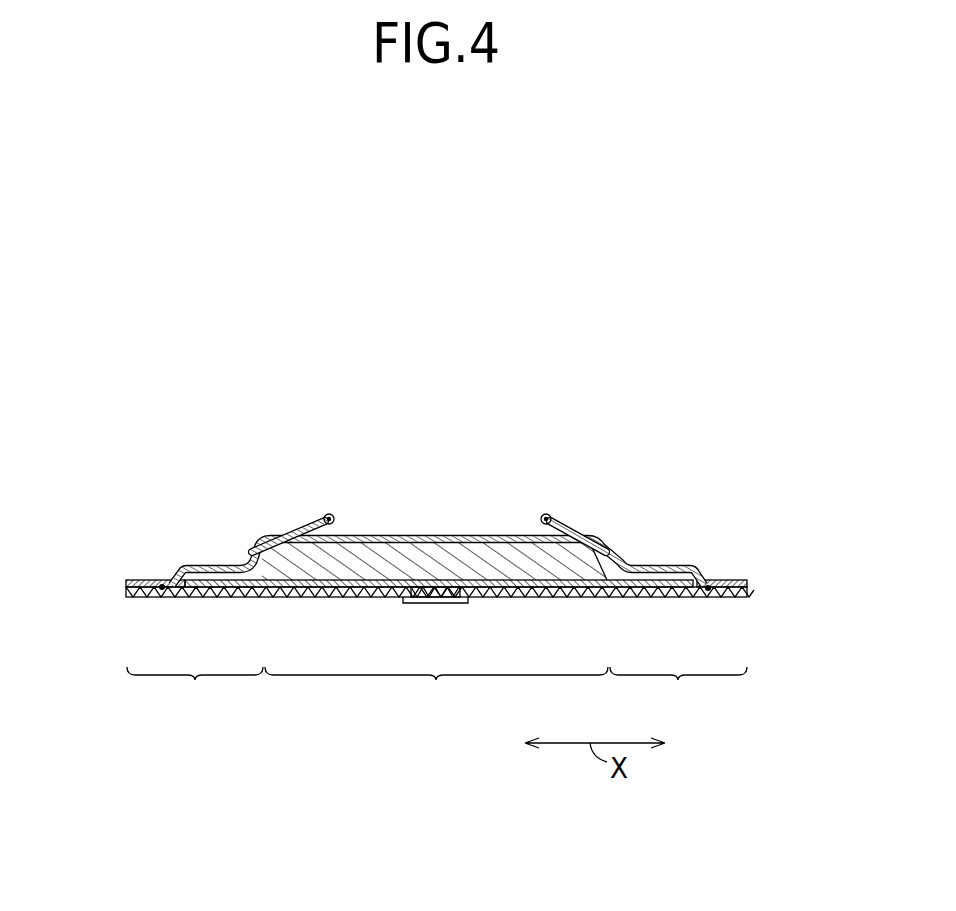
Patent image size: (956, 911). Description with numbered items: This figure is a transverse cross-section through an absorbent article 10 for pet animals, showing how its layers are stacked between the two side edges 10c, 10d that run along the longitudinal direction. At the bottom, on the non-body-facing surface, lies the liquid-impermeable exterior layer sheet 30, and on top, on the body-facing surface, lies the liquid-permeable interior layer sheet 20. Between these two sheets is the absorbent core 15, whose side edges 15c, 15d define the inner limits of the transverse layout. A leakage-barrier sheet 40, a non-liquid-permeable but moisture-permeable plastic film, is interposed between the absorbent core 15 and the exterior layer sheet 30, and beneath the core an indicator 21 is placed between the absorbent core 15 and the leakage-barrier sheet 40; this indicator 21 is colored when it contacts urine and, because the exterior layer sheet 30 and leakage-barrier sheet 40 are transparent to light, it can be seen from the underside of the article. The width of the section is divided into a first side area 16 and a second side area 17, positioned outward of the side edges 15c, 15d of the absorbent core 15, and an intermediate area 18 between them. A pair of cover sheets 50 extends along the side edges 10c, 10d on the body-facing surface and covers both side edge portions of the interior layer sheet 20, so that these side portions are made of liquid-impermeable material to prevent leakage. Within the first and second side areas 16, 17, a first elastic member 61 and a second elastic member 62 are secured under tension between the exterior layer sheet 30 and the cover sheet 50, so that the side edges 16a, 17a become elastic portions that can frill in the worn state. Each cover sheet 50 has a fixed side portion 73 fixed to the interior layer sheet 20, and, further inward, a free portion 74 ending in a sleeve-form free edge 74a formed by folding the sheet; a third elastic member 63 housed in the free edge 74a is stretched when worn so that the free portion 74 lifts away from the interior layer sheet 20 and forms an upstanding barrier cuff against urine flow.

The absorbent article 10 is at (436, 566).
The side edge 10c is at (125, 583).
The side edge 10d is at (748, 586).
The absorbent core 15 is at (327, 597).
The side edge of absorbent core 15c is at (257, 597).
The side edge of absorbent core 15d is at (607, 597).
The first side area 16 is at (195, 692).
The side edge 16a is at (175, 580).
The second side area 17 is at (678, 692).
The side edge 17a is at (700, 580).
The intermediate area 18 is at (436, 692).
The liquid-permeable interior layer sheet 20 is at (435, 540).
The indicator 21 is at (438, 604).
The liquid-impermeable exterior layer sheet 30 is at (375, 597).
The leakage-barrier sheet 40 is at (518, 597).
The cover sheet 50 is at (224, 565).
The first elastic member 61 is at (160, 597).
The second elastic member 62 is at (710, 597).
The third elastic member 63 is at (334, 518).
The fixed side portion 73 is at (160, 583).
The free portion 74 is at (296, 531).
The free edge 74a is at (327, 514).